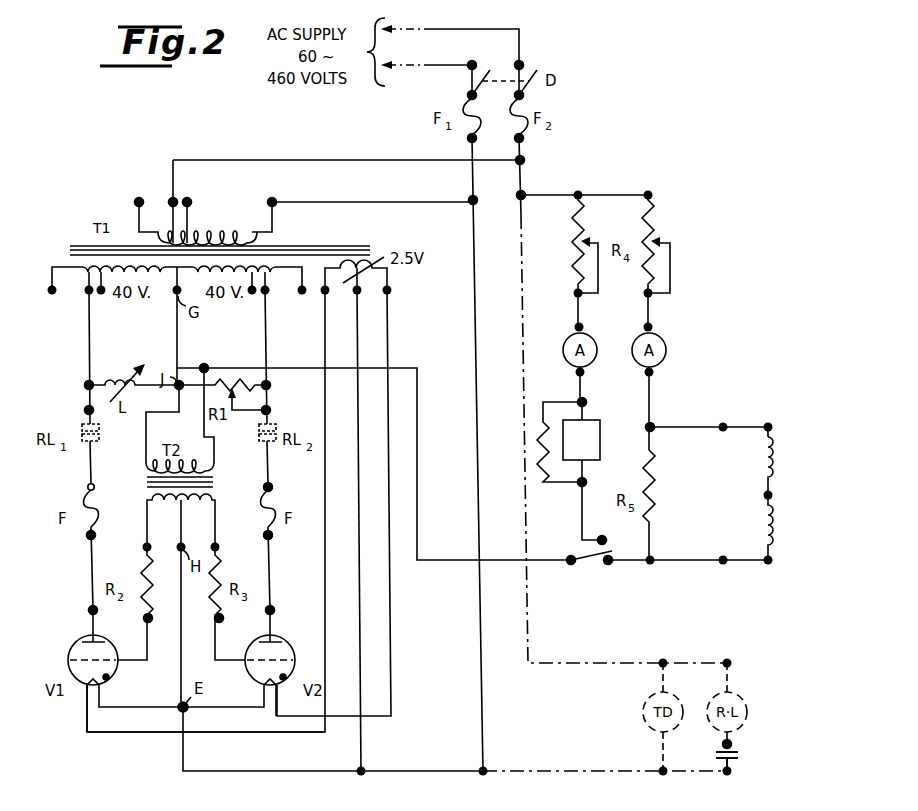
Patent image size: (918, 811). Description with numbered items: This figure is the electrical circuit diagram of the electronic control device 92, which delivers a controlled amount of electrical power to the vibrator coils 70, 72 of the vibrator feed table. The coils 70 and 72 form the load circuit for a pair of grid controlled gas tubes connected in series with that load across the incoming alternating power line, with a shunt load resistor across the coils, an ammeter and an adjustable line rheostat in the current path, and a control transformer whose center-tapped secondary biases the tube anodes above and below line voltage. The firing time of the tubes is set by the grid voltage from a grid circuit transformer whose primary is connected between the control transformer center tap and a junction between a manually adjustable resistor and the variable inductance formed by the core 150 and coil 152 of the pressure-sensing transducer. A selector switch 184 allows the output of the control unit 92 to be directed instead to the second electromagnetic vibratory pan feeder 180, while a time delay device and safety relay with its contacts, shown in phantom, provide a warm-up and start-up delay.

The vibrator coil 70 is at (764, 458).
The vibrator coil 72 is at (764, 522).
The electronic control device 92 is at (153, 746).
The core 150 is at (136, 374).
The coil 152 is at (116, 376).
The second electromagnetic vibratory pan feeder 180 is at (591, 432).
The selector switch 184 is at (604, 565).